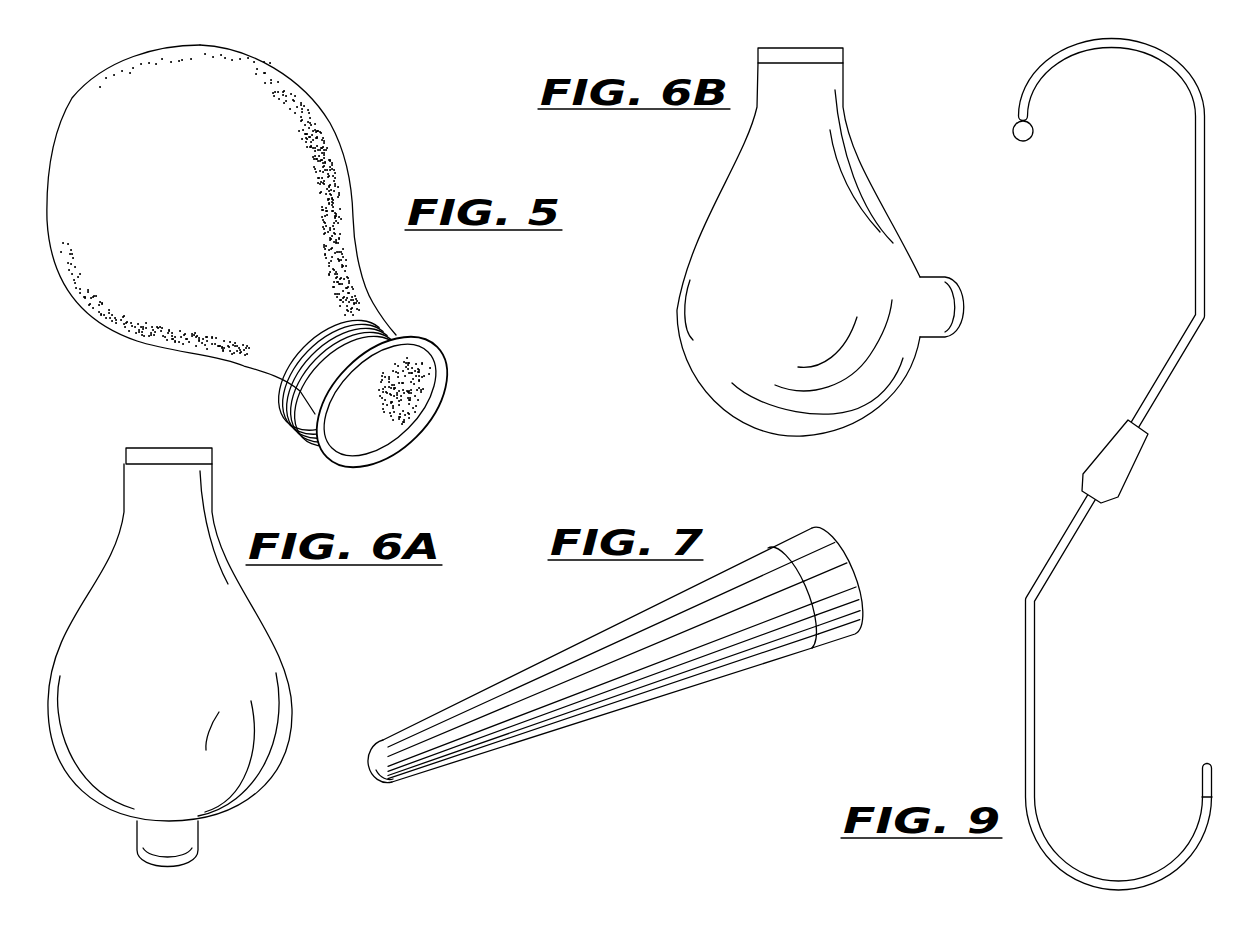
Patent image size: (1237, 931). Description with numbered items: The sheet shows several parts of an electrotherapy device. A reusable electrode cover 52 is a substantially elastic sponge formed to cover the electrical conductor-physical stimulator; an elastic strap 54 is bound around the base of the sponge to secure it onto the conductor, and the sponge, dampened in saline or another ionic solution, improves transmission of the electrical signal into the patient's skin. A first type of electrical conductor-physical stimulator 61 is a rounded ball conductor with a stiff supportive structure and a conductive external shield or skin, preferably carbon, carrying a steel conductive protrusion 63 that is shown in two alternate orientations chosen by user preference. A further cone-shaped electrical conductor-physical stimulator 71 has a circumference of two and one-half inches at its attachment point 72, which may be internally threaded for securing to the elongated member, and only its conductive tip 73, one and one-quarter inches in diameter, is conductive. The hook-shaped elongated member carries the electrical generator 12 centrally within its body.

In FIG. 9, the electrical generator 12 is at (1115, 462).
In FIG. 5, the reusable electrode cover 52 is at (353, 170).
In FIG. 5, the elastic strap 54 is at (306, 393).
In FIG. 6B, the electrical conductor-physical stimulator 61 is at (798, 253).
In FIG. 6A, the electrical conductor-physical stimulator 61 is at (182, 684).
In FIG. 6B, the conductive protrusion 63 is at (943, 297).
In FIG. 6A, the conductive protrusion 63 is at (183, 839).
In FIG. 7, the electrical conductor-physical stimulator 71 is at (628, 642).
In FIG. 7, the attachment point 72 is at (826, 617).
In FIG. 7, the conductive tip 73 is at (375, 767).